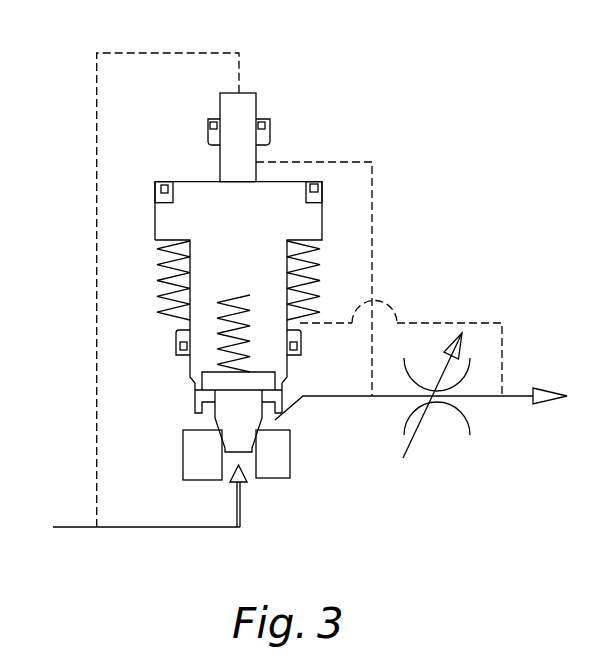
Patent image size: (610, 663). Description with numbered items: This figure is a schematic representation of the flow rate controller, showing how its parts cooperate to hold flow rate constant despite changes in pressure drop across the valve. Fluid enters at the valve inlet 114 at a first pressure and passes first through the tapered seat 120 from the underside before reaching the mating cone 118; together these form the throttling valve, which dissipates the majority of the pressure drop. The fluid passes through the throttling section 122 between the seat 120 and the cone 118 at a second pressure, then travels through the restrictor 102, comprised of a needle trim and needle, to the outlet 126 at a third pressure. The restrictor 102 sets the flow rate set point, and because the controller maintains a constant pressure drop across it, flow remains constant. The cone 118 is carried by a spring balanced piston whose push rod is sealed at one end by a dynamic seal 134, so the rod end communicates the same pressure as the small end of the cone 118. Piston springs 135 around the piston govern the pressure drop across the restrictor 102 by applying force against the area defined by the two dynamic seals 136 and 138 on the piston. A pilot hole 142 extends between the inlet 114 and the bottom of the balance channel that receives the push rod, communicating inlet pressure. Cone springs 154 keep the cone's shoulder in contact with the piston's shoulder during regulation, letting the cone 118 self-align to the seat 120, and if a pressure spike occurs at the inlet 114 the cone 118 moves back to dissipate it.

The restrictor 102 is at (420, 430).
The valve inlet 114 is at (170, 527).
The cone 118 is at (252, 445).
The seat 120 is at (283, 465).
The throttling section 122 is at (222, 440).
The outlet 126 is at (512, 400).
The dynamic seal 134 is at (263, 120).
The piston springs 135 is at (313, 273).
The dynamic seal 136 is at (180, 355).
The dynamic seal 138 is at (325, 187).
The pilot hole 142 is at (97, 227).
The cone springs 154 is at (243, 293).